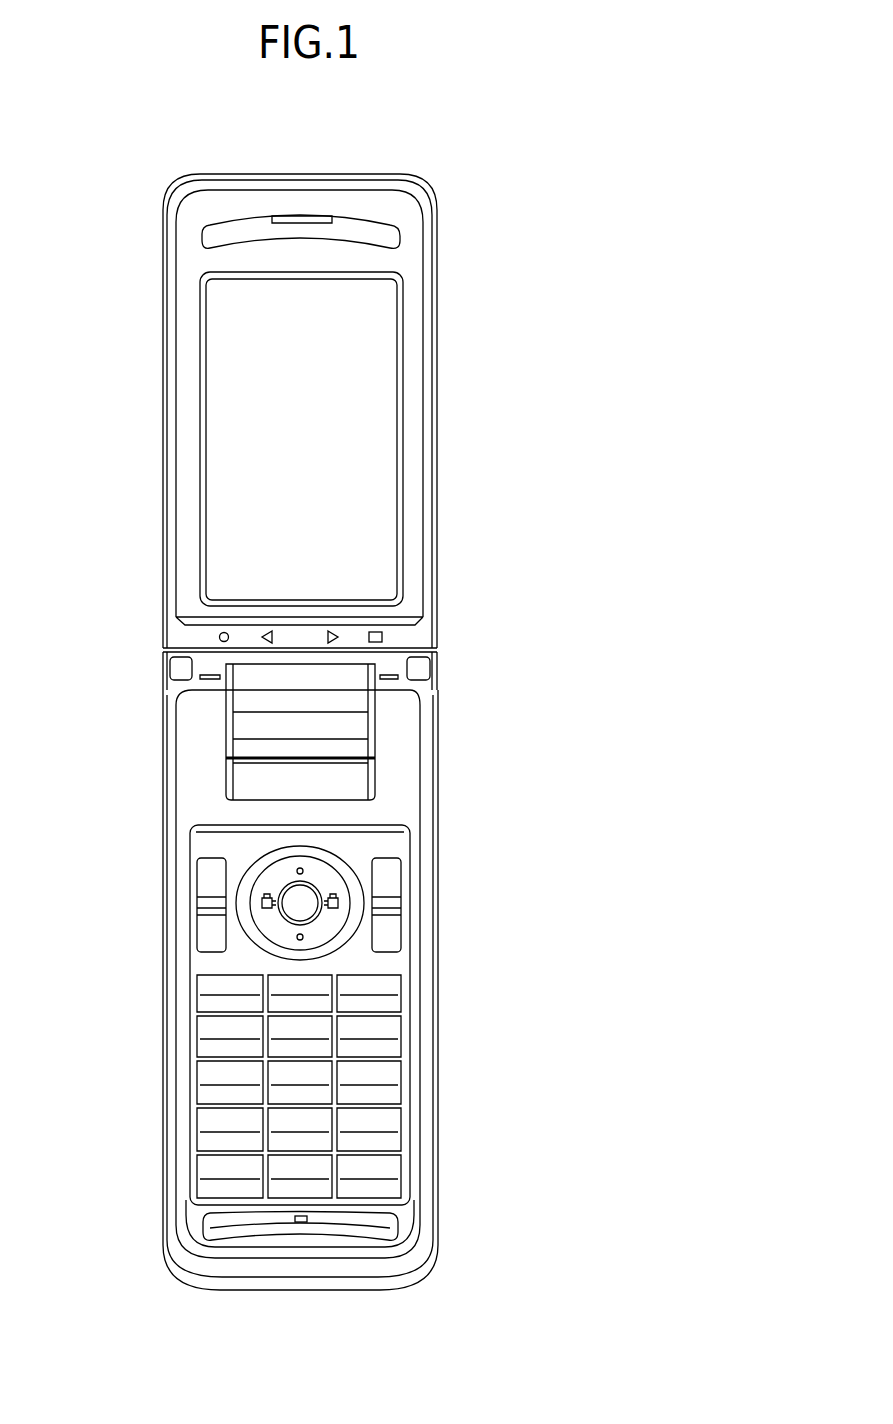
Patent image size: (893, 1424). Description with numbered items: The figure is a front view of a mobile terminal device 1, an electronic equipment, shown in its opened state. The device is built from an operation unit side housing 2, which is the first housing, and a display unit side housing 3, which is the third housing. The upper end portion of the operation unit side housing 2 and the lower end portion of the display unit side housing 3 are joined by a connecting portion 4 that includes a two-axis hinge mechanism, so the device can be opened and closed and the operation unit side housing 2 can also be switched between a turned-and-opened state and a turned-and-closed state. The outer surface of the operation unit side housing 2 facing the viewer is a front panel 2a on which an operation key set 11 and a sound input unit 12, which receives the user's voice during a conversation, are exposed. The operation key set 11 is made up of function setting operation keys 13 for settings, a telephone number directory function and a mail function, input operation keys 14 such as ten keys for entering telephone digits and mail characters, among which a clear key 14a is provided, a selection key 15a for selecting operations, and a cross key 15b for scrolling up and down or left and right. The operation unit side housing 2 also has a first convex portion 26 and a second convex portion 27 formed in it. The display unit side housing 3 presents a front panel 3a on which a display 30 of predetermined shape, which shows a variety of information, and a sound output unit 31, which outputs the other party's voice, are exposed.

The mobile terminal device 1 is at (502, 138).
The operation unit side housing 2 is at (480, 793).
The front panel 2a is at (395, 768).
The display unit side housing 3 is at (142, 414).
The front panel 3a is at (410, 262).
The connecting portion 4 is at (140, 658).
The operation key set 11 is at (532, 805).
The sound input unit 12 is at (407, 1208).
The function setting operation keys 13 is at (387, 933).
The input operation keys 14 is at (395, 982).
The clear key 14a is at (320, 977).
The selection key 15a is at (307, 898).
The cross key 15b is at (320, 873).
The first convex portion 26 is at (260, 1231).
The second convex portion 27 is at (266, 778).
The display 30 is at (375, 420).
The sound output unit 31 is at (336, 210).